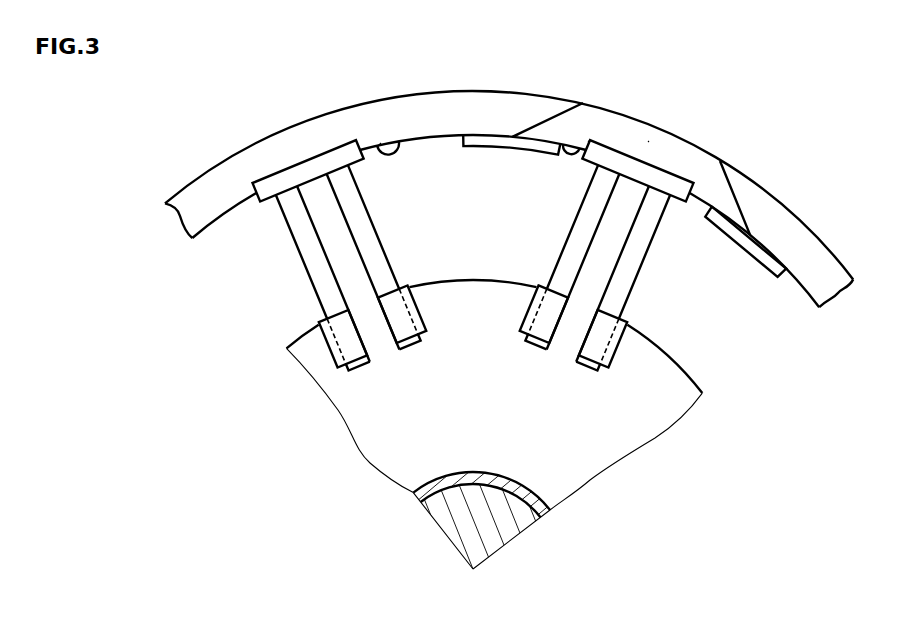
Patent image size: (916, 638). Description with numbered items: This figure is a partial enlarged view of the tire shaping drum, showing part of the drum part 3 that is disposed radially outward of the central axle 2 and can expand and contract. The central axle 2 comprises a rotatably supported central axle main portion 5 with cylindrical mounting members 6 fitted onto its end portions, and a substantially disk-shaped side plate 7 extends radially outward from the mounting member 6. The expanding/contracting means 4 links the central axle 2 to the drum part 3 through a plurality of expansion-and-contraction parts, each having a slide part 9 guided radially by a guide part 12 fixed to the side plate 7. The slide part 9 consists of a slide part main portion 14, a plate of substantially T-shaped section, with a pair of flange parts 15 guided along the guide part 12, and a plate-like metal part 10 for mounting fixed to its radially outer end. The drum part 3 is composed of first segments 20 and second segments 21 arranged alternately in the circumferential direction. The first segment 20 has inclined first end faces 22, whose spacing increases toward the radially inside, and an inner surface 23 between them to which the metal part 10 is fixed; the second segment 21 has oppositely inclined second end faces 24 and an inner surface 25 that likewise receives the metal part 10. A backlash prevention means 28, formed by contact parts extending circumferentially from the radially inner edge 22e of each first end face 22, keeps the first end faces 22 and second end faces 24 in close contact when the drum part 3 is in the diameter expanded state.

The central axle 2 is at (476, 509).
The drum part 3 is at (447, 92).
The expanding/contracting means 4 is at (481, 299).
The central axle main portion 5 is at (463, 528).
The mounting member 6 is at (423, 491).
The side plate 7 is at (382, 427).
The slide part 9 is at (478, 303).
The metal part for mounting 10 is at (265, 190).
The guide part 12 is at (343, 340).
The slide part main portion 14 is at (318, 214).
The flange parts 15 is at (317, 260).
The first segment 20 is at (648, 142).
The second segment 21 is at (408, 110).
The first end faces 22 is at (582, 112).
The radially inner edge of first end face 22e is at (512, 133).
The inner surface 23 is at (590, 143).
The second end faces 24 is at (584, 141).
The inner surface 25 is at (378, 145).
The backlash prevention means 28 is at (686, 152).